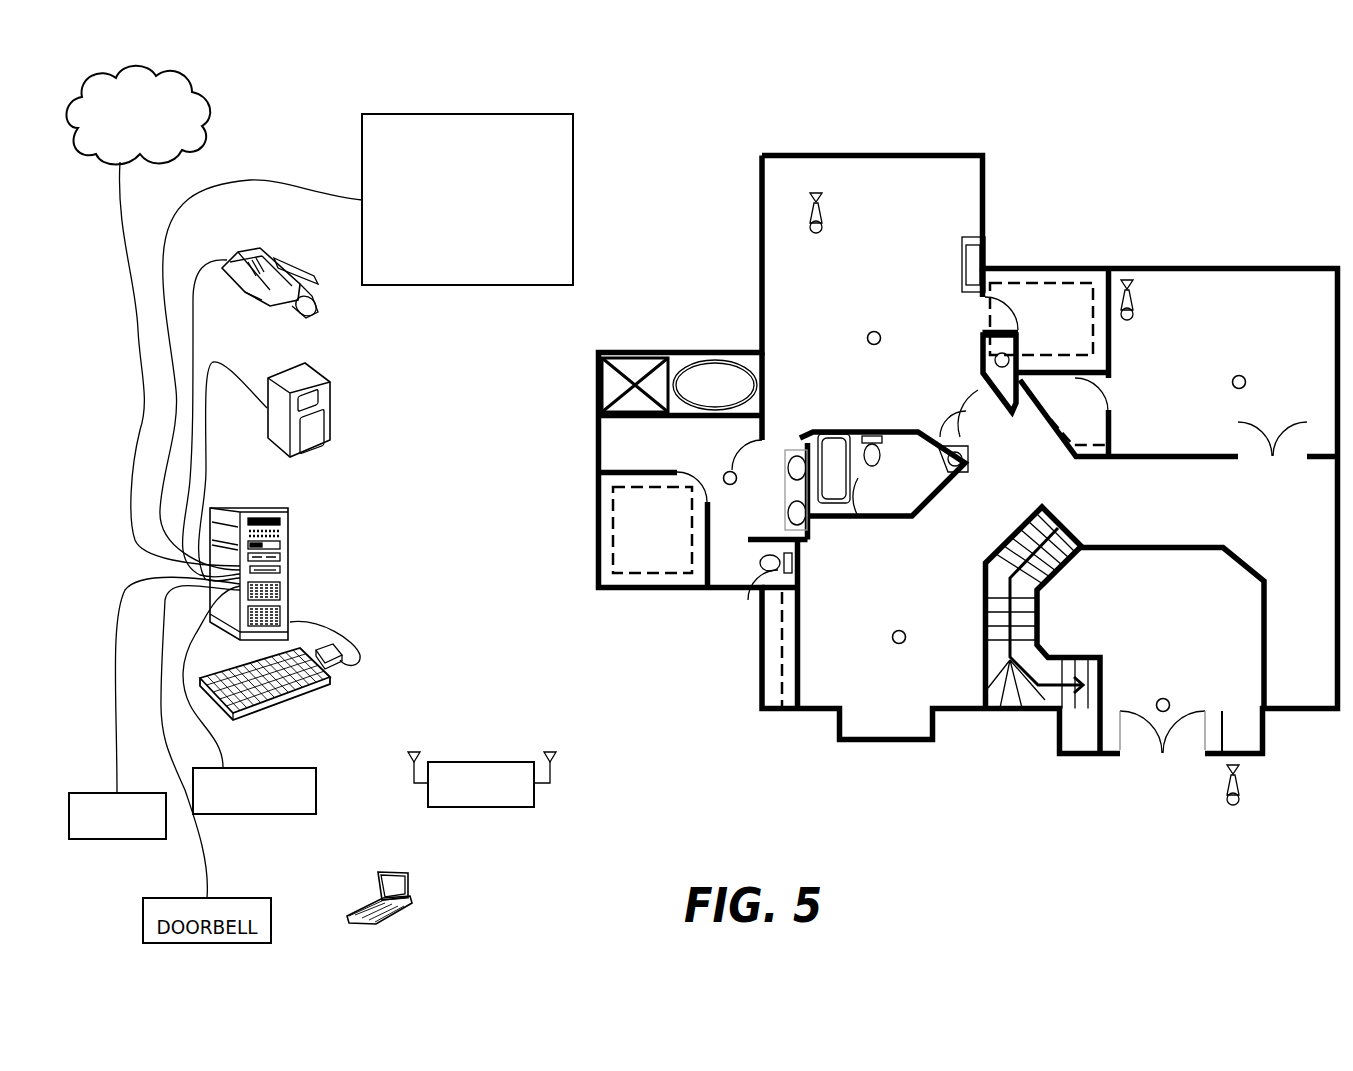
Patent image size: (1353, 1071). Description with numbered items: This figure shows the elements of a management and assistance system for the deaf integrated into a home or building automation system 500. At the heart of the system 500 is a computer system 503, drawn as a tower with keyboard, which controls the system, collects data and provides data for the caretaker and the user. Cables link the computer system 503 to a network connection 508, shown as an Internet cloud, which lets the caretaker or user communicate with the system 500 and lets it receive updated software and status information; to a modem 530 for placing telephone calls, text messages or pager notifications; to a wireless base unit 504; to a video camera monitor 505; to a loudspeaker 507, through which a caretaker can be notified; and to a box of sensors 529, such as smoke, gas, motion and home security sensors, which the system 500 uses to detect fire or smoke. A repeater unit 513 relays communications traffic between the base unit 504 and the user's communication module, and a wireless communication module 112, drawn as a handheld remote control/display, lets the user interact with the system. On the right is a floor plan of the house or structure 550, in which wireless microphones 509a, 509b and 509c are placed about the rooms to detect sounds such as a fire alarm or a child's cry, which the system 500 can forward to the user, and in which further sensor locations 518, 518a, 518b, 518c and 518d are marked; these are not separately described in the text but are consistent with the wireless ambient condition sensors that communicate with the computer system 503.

The home or building automation system 500 is at (652, 165).
The computer system 503 is at (388, 490).
The wireless base unit 504 is at (258, 768).
The video camera monitor 505 is at (280, 264).
The loudspeaker 507 is at (330, 392).
The network connection 508 is at (152, 72).
The wireless microphone 509a is at (822, 231).
The wireless microphone 509b is at (1133, 316).
The wireless microphone 509c is at (1242, 801).
The repeater unit 513 is at (466, 760).
The sensor 518 is at (897, 630).
The sensor 518a is at (871, 331).
The sensor 518b is at (1238, 376).
The sensor 518c is at (1165, 698).
The sensor 518d is at (728, 471).
The sensors 529 is at (545, 113).
The modem 530 is at (85, 839).
The house or structure 550 is at (1073, 236).
The wireless communication module 112 is at (393, 868).